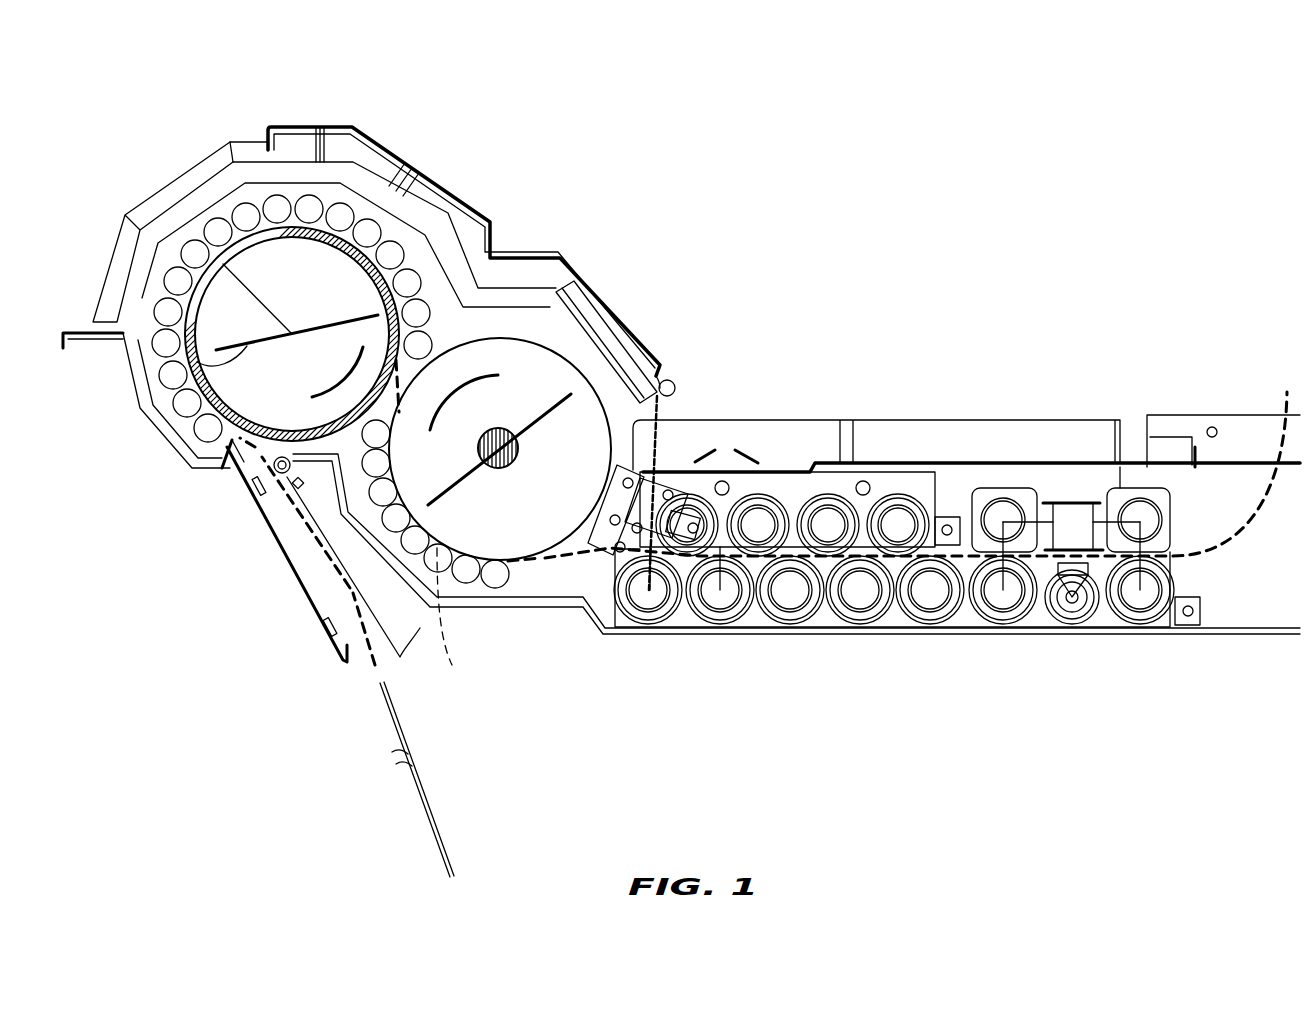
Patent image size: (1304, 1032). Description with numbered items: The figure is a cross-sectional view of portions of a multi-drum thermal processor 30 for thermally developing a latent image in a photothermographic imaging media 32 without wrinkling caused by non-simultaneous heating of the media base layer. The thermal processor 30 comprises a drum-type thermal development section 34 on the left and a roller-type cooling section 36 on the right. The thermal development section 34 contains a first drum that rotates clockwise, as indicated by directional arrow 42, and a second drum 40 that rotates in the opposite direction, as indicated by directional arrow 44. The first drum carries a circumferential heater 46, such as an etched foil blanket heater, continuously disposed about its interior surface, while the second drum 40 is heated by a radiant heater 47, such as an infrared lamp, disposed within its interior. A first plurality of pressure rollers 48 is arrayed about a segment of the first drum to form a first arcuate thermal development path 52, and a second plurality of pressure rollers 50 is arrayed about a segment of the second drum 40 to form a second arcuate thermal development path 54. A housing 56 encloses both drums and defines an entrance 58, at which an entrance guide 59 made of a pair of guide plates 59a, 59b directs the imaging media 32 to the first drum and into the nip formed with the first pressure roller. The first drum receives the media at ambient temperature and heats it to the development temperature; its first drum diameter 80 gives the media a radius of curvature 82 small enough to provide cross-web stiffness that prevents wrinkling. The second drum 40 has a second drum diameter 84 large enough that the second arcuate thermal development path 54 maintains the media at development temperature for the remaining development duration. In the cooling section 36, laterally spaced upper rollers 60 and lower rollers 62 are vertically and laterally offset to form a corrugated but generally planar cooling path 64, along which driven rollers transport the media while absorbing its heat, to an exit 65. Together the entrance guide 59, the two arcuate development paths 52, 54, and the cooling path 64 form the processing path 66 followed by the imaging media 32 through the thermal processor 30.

The multi-drum thermal processor 30 is at (956, 92).
The imaging media 32 is at (400, 738).
The thermal development section 34 is at (491, 138).
The cooling section 36 is at (957, 366).
The second drum 40 is at (552, 350).
The directional arrow 42 is at (343, 378).
The directional arrow 44 is at (468, 398).
The circumferential heater 46 is at (304, 240).
The radiant heater 47 is at (516, 449).
The first plurality of pressure rollers 48 is at (178, 243).
The second plurality of pressure rollers 50 is at (445, 575).
The first arcuate thermal development path 52 is at (213, 205).
The second arcuate thermal development path 54 is at (447, 672).
The housing 56 is at (378, 136).
The entrance 58 is at (262, 465).
The entrance guide 59 is at (272, 631).
The guide plate 59a is at (400, 660).
The guide plate 59b is at (335, 655).
The upper rollers 60 is at (792, 497).
The lower rollers 62 is at (828, 628).
The cooling path 64 is at (790, 568).
The exit 65 is at (1243, 415).
The processing path 66 is at (368, 660).
The diameter D1 80 is at (198, 355).
The radius of curvature R 82 is at (253, 291).
The diameter D2 84 is at (465, 491).